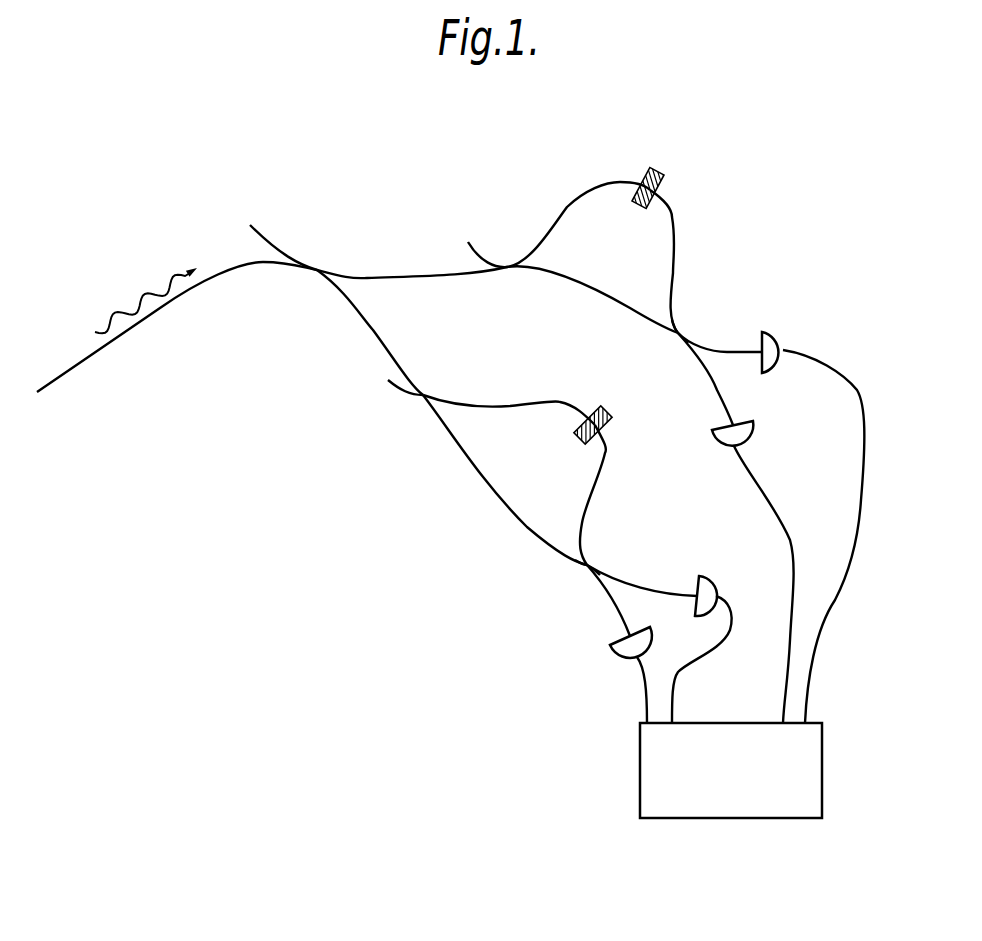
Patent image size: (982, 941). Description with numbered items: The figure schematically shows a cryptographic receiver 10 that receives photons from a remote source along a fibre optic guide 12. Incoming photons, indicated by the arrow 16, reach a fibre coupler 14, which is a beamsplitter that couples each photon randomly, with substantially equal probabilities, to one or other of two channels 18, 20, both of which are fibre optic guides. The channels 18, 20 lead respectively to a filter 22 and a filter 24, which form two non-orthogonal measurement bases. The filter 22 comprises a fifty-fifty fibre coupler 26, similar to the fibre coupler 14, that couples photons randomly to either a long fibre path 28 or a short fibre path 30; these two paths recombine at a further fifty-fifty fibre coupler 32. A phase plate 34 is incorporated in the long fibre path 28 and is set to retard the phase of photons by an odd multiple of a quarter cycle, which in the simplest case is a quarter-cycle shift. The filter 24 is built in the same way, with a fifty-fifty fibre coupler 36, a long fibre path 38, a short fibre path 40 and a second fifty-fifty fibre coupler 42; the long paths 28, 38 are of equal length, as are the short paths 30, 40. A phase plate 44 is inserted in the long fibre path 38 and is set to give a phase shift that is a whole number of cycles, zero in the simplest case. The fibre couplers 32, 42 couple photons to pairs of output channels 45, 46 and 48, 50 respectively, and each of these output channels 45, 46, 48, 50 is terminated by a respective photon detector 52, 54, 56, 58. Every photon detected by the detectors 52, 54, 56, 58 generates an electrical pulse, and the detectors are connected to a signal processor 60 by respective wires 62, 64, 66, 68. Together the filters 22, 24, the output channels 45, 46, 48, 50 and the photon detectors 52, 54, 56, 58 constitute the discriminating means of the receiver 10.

The cryptographic receiver 10 is at (395, 188).
The fibre optic guide 12 is at (93, 352).
The fibre coupler 14 is at (317, 275).
The incoming photons 16 is at (133, 298).
The channel 18 is at (397, 277).
The channel 20 is at (378, 335).
The filter 22 is at (692, 235).
The filter 24 is at (602, 507).
The 50/50 fibre coupler 26 is at (508, 263).
The long fibre path 28 is at (567, 208).
The short fibre path 30 is at (573, 283).
The 50/50 fibre coupler 32 is at (678, 333).
The phase plate 34 is at (664, 174).
The 50/50 fibre coupler 36 is at (433, 403).
The long fibre path 38 is at (482, 408).
The short fibre path 40 is at (478, 468).
The second 50/50 fibre coupler 42 is at (585, 570).
The phase plate 44 is at (613, 410).
The output channel 45 is at (733, 348).
The output channel 46 is at (703, 368).
The output channel 48 is at (633, 582).
The output channel 50 is at (618, 610).
The photon detector 52 is at (782, 337).
The photon detector 54 is at (753, 428).
The photon detector 56 is at (713, 577).
The photon detector 58 is at (625, 658).
The signal processor 60 is at (640, 785).
The wire 62 is at (828, 602).
The wire 64 is at (793, 542).
The wire 66 is at (700, 655).
The wire 68 is at (643, 702).